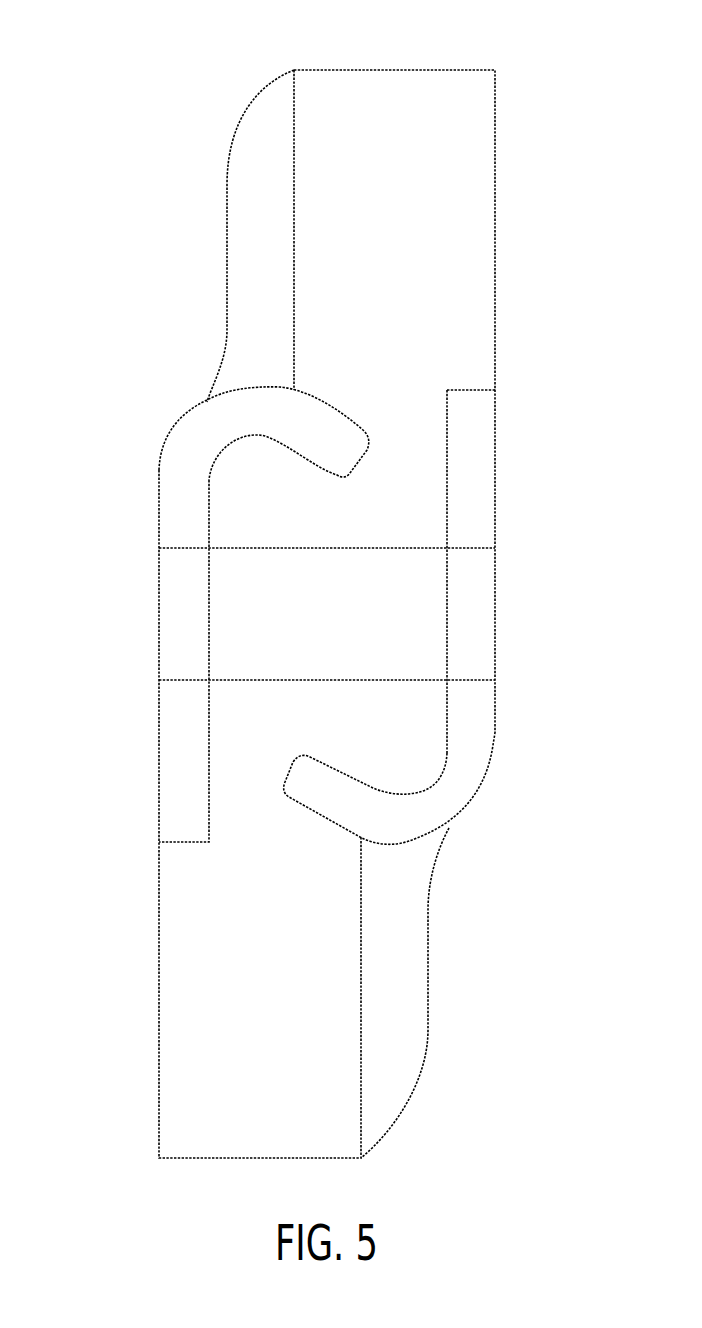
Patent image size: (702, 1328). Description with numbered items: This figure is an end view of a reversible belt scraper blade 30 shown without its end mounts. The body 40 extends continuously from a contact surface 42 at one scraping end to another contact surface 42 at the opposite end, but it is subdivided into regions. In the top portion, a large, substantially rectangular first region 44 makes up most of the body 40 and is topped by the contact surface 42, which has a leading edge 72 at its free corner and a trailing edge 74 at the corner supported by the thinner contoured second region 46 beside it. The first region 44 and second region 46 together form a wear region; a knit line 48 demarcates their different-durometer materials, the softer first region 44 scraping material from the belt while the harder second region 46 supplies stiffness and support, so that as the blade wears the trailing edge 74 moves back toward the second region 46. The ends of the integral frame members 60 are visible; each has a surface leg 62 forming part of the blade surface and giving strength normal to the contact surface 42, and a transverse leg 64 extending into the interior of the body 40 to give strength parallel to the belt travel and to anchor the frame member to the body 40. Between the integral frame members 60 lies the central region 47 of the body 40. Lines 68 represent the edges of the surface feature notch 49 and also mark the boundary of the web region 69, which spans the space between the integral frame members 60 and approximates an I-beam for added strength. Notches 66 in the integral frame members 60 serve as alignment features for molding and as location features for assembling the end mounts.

The reversible belt scraper blade 30 is at (117, 205).
The body 40 is at (528, 213).
The contact surface 42 is at (422, 68).
The first region 44 is at (473, 140).
The second region 46 is at (238, 133).
The central region 47 is at (332, 505).
The knit line 48 is at (293, 88).
The notch 49 is at (243, 607).
The integral frame member 60 is at (135, 495).
The surface leg 62 is at (480, 518).
The transverse leg 64 is at (335, 805).
The notch 66 is at (480, 635).
The lines 68 is at (240, 547).
The web region 69 is at (243, 618).
The leading edge 72 is at (497, 68).
The trailing edge 74 is at (293, 68).